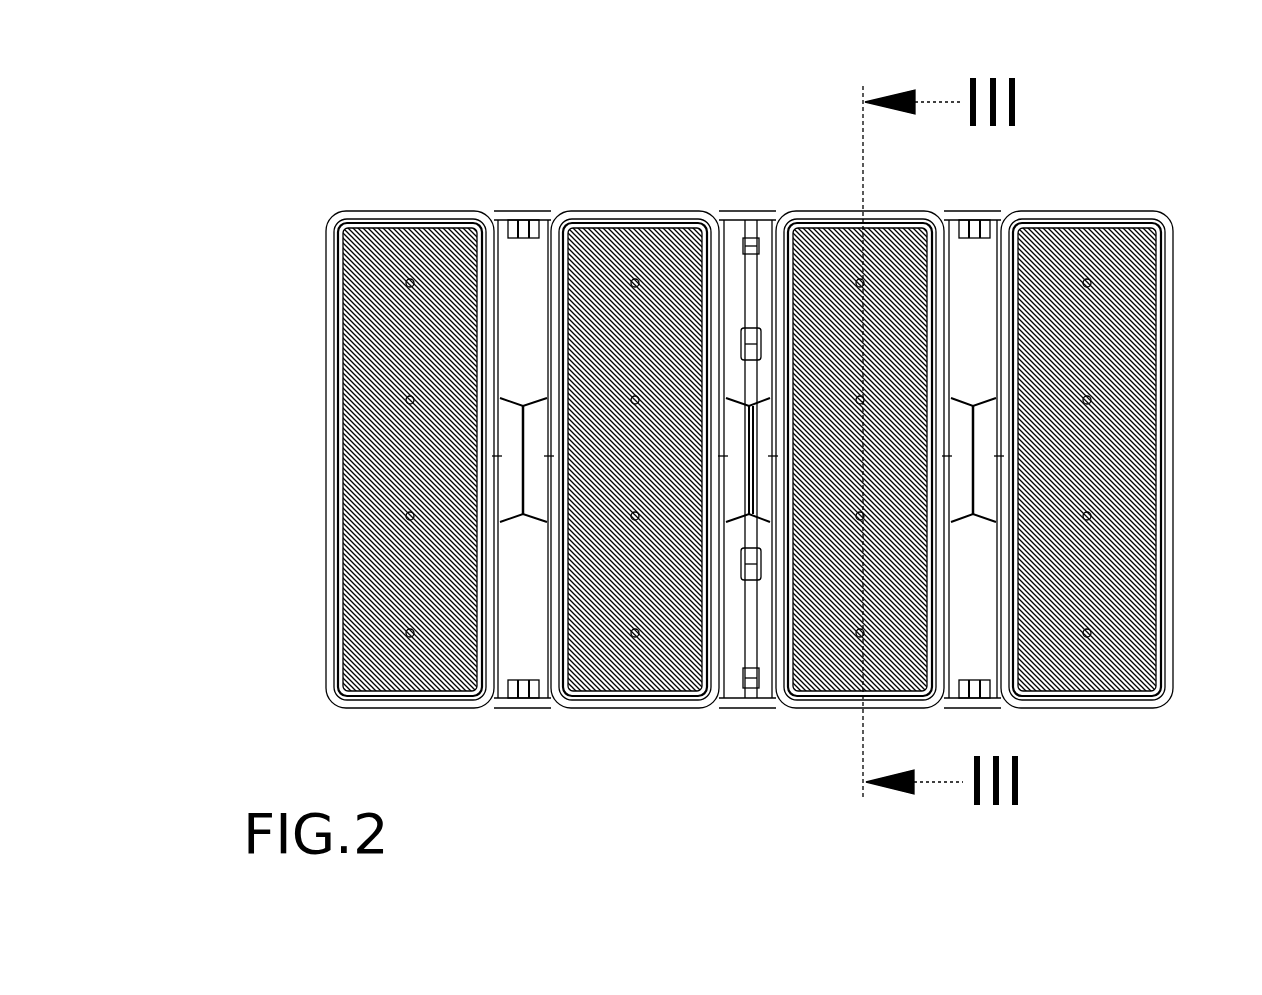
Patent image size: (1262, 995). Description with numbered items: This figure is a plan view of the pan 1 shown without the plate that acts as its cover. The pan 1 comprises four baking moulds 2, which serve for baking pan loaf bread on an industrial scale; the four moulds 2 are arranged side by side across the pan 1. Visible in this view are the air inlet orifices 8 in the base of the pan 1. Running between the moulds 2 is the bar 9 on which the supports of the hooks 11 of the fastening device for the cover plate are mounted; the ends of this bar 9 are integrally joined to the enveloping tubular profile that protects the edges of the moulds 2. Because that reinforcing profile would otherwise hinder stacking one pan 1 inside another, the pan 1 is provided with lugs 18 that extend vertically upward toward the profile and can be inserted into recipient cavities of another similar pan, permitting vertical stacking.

The pan 1 is at (345, 154).
The baking mould 2 is at (316, 232).
The air inlet orifice 8 is at (318, 545).
The bar 9 is at (745, 690).
The hook 11 is at (740, 205).
The lug 18 is at (514, 208).